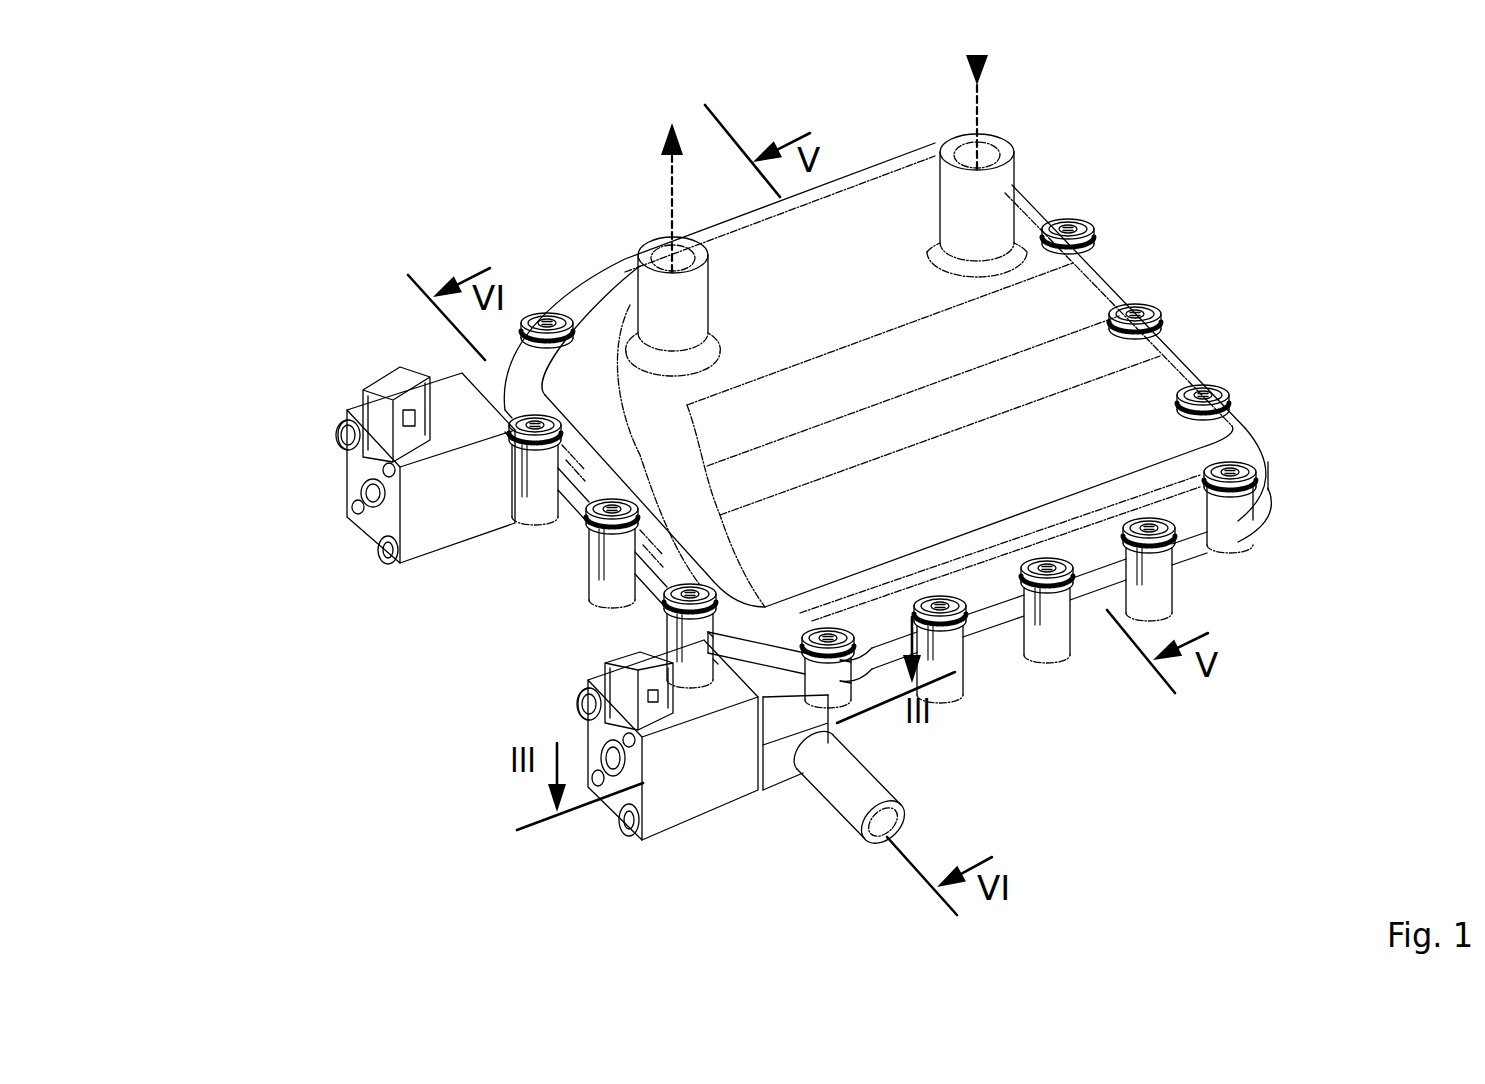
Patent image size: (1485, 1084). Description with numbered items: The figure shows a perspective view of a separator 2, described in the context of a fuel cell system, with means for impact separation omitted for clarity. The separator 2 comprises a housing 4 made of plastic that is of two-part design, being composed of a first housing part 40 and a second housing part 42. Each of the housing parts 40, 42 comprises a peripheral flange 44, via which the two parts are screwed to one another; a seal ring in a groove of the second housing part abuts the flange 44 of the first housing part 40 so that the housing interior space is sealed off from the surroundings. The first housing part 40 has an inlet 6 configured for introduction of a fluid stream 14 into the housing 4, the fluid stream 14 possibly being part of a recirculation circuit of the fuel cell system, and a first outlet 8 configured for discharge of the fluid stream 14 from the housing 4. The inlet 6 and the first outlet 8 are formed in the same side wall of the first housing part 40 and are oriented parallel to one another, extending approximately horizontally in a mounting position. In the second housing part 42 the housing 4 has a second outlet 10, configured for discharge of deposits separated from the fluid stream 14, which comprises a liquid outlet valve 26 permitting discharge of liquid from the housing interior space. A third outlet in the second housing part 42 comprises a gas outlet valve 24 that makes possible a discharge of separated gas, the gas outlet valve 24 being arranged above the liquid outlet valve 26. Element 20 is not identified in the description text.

The separator 2 is at (552, 281).
The housing 4 is at (1203, 331).
The inlet 6 is at (1012, 185).
The first outlet 8 is at (641, 268).
The second outlet 10 is at (798, 806).
The fluid stream 14 is at (668, 182).
The outlet pipe 20 is at (883, 835).
The gas outlet valve 24 is at (343, 445).
The liquid outlet valve 26 is at (580, 685).
The first housing part 40 is at (1251, 450).
The second housing part 42 is at (1187, 584).
The peripheral flange 44 is at (1217, 567).